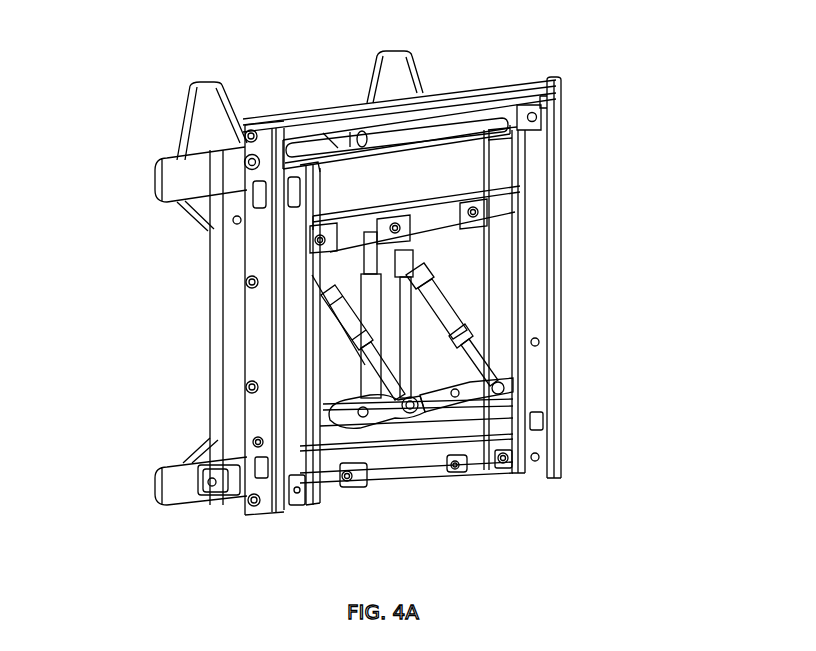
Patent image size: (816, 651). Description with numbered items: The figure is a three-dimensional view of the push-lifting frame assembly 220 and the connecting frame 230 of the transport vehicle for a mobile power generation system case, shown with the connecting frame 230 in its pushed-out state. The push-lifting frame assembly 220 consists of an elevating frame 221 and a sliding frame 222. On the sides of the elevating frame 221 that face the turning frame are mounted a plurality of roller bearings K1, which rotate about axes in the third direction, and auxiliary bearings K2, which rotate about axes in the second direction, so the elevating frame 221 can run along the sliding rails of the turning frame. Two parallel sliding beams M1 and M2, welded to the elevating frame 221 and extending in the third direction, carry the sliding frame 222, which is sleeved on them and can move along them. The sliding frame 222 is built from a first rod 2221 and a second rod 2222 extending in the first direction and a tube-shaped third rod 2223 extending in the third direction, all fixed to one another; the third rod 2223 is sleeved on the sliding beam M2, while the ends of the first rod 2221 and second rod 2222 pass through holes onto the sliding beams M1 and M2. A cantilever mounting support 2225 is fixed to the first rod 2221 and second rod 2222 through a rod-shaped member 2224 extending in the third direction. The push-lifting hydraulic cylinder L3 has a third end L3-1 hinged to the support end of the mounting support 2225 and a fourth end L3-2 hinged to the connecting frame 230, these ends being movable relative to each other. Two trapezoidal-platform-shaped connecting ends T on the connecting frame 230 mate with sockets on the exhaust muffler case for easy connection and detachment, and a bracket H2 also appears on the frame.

The connecting end T is at (210, 115).
The third rod 2223 is at (405, 165).
The sliding beam M2 is at (548, 103).
The sliding frame 222 is at (522, 160).
The push-lifting frame assembly 220 is at (626, 125).
The elevating frame 221 is at (533, 203).
The fourth end L3-2 is at (408, 254).
The first rod 2221 is at (507, 267).
The push-lifting hydraulic cylinder L3 is at (457, 318).
The third end L3-1 is at (493, 377).
The lower bracket H2 is at (543, 432).
The rod-shaped member 2224 is at (477, 450).
The mounting support 2225 is at (393, 437).
The sliding beam M1 is at (295, 487).
The roller bearing K1 is at (240, 267).
The connecting frame 230 is at (232, 311).
The second rod 2222 is at (300, 338).
The auxiliary bearing K2 is at (253, 433).